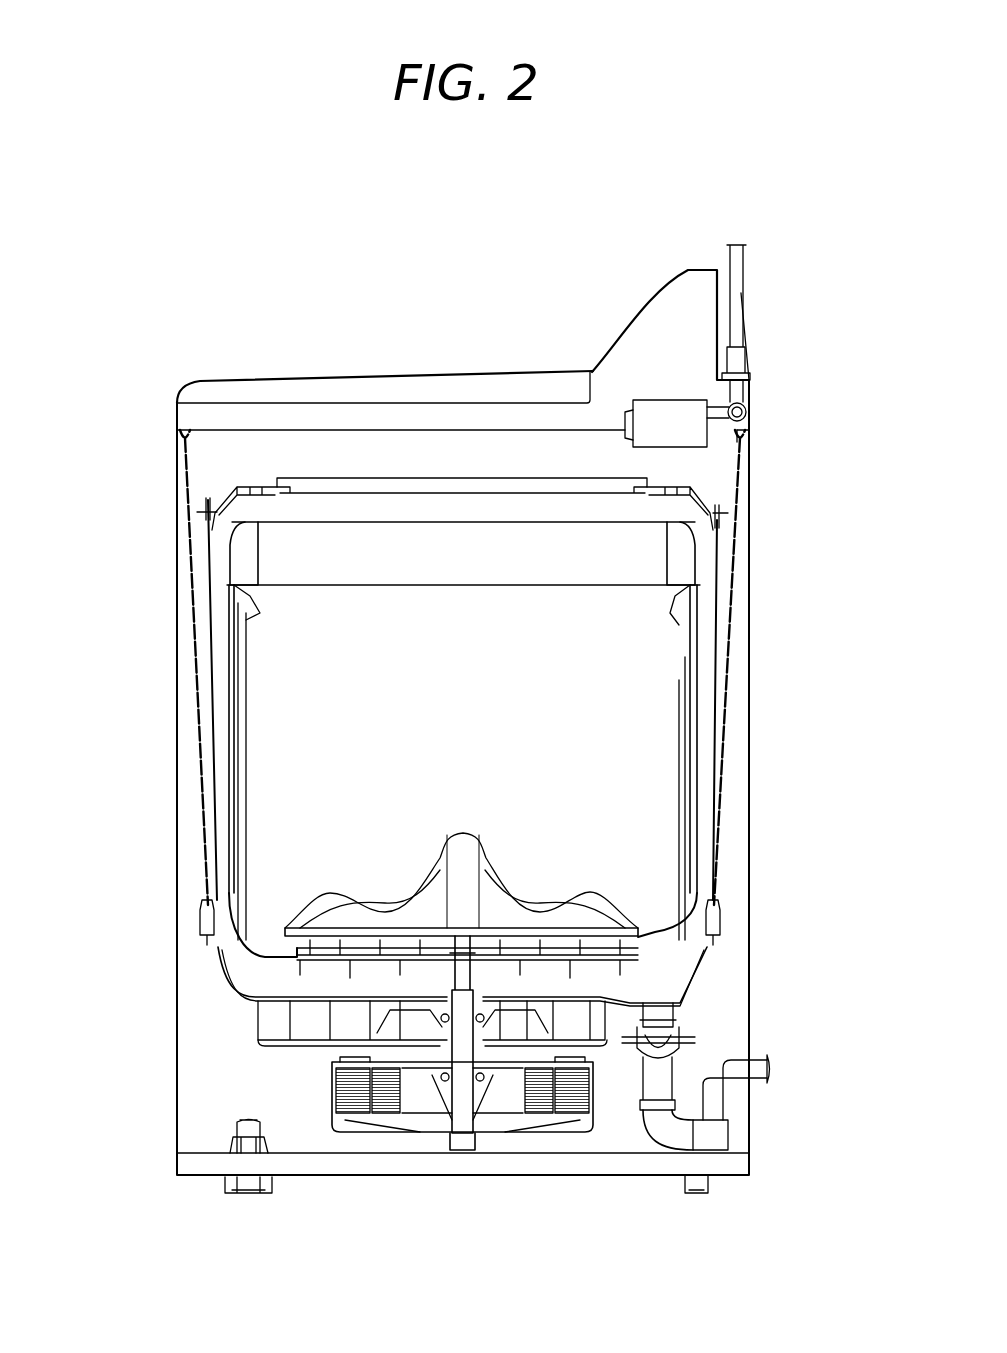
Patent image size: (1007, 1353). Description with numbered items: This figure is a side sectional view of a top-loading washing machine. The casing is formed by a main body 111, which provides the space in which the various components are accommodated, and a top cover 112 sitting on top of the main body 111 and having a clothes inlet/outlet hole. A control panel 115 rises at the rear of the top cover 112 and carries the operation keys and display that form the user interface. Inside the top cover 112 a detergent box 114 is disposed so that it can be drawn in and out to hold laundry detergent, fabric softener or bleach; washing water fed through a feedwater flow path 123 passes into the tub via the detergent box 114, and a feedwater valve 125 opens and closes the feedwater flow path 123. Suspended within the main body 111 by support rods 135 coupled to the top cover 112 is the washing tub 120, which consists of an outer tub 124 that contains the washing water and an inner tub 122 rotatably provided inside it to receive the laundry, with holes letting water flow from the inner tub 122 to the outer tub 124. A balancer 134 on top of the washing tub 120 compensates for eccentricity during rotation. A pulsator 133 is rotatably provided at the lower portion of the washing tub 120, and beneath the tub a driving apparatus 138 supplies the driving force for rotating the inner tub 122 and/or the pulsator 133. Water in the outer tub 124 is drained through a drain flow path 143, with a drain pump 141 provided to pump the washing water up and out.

The main body 111 is at (177, 800).
The top cover 112 is at (310, 375).
The detergent box 114 is at (637, 394).
The control panel 115 is at (678, 270).
The washing tub 120 is at (379, 815).
The inner tub 122 is at (228, 710).
The feedwater flow path 123 is at (737, 273).
The outer tub 124 is at (105, 725).
The feedwater valve 125 is at (745, 398).
The pulsator 133 is at (337, 917).
The balancer 134 is at (243, 552).
The support rod 135 is at (183, 470).
The driving apparatus 138 is at (324, 1090).
The drain pump 141 is at (717, 1143).
The drain flow path 143 is at (653, 1135).